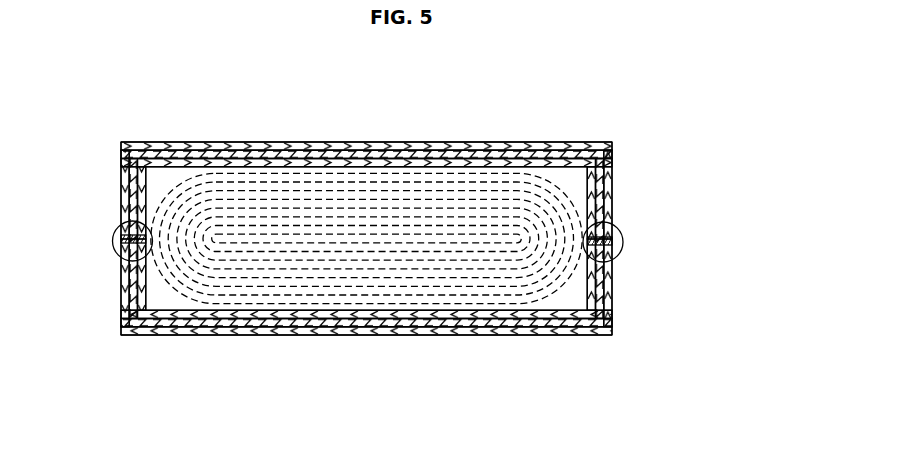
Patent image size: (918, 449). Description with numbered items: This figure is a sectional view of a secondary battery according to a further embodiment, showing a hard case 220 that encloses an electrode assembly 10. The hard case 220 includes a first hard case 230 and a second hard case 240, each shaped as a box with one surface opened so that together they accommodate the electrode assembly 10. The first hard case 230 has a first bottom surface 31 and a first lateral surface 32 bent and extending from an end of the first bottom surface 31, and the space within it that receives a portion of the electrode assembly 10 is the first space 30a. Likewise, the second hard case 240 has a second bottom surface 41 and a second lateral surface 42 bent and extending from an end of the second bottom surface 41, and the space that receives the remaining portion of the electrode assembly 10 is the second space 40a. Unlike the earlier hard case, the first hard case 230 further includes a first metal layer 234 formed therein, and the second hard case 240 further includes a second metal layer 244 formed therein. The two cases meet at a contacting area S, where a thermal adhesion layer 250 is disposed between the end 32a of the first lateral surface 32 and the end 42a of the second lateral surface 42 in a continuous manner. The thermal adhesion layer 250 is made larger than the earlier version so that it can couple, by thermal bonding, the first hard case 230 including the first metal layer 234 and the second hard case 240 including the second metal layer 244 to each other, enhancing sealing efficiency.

The electrode assembly 10 is at (318, 176).
The hard case 220 is at (716, 190).
The second hard case 240 is at (628, 198).
The first hard case 230 is at (628, 293).
The second metal layer 244 is at (491, 150).
The second bottom surface 41 is at (389, 148).
The second space 40a is at (170, 175).
The second lateral surface 42 is at (610, 177).
The end of the second lateral surface 42a is at (122, 235).
The first metal layer 234 is at (372, 323).
The first bottom surface 31 is at (278, 332).
The first space 30a is at (168, 301).
The first lateral surface 32 is at (607, 299).
The end of the first lateral surface 32a is at (122, 246).
The thermal adhesion layer 250 is at (612, 240).
The contacting area S is at (112, 246).